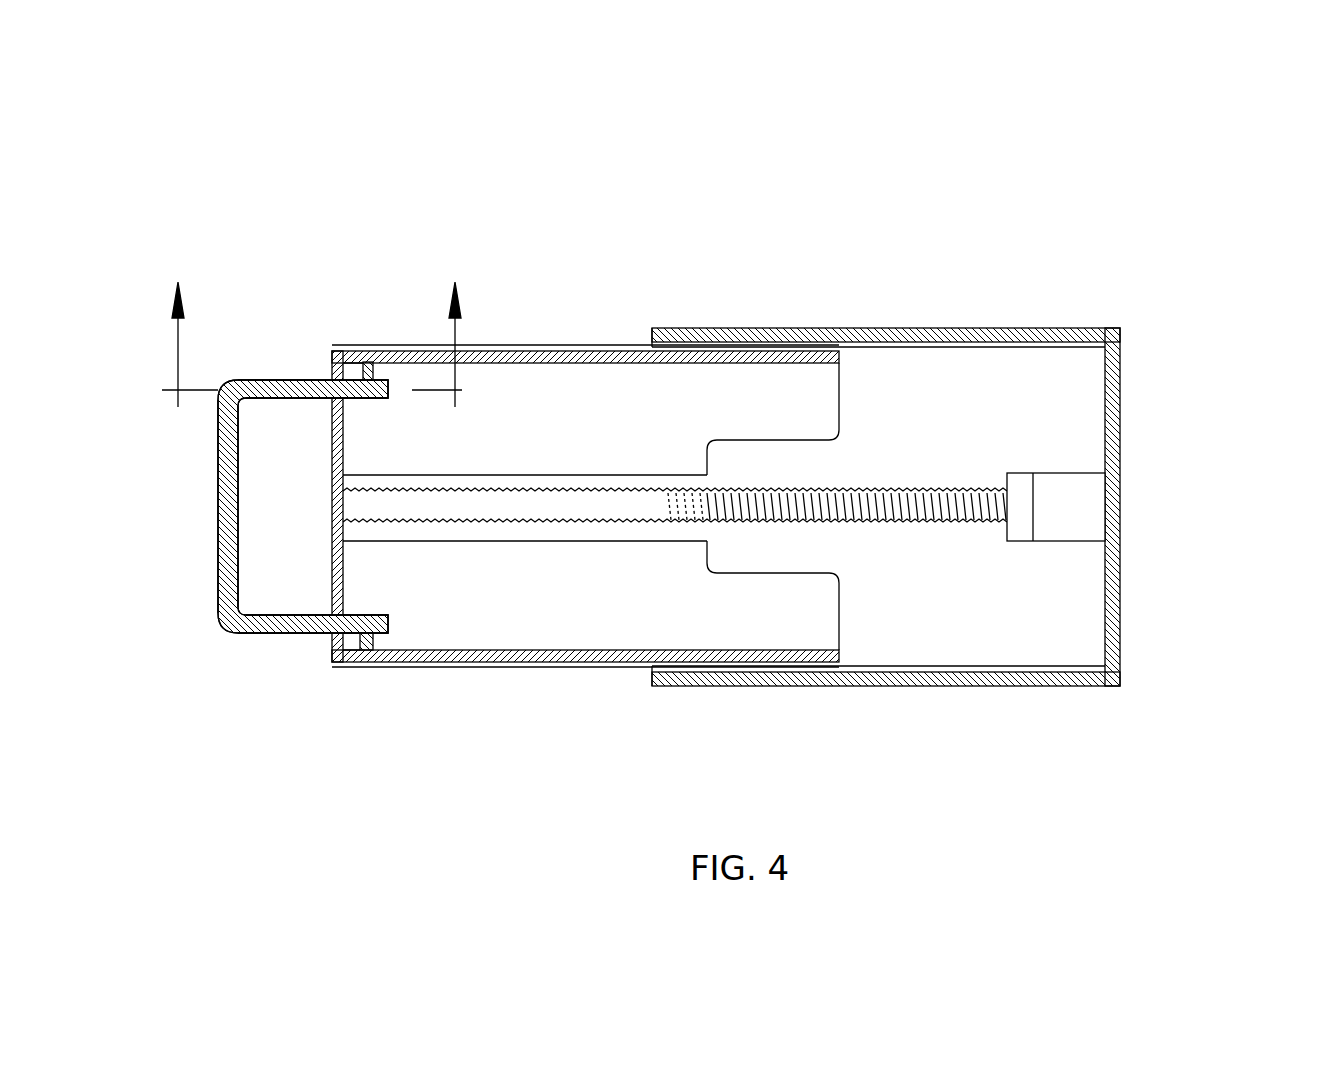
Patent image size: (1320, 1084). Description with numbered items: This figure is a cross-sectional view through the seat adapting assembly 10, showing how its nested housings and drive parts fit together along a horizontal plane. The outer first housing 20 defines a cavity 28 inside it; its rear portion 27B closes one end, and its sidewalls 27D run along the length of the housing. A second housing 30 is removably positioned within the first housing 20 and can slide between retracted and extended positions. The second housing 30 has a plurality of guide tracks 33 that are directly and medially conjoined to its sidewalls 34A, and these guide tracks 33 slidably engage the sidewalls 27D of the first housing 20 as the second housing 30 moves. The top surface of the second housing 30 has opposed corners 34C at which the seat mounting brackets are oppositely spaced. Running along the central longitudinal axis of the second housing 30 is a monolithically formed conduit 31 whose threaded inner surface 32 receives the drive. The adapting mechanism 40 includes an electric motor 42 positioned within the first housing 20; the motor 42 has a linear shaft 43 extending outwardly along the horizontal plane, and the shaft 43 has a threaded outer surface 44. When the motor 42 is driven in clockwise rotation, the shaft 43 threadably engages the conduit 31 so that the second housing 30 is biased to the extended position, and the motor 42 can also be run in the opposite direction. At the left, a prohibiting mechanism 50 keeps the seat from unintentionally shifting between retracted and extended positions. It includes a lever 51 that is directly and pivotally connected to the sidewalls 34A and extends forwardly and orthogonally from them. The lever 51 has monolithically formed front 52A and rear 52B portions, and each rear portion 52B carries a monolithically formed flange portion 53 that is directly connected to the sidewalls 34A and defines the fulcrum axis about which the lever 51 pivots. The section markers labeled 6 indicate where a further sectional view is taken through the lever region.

The assembly 10 is at (1206, 240).
The section line 6- 6 is at (316, 344).
The first housing 20 is at (1122, 328).
The rear portion 27B is at (1122, 372).
The sidewalls 27D is at (950, 328).
The cavity 28 is at (1073, 643).
The second housing 30 is at (330, 363).
The conduit 31 is at (587, 482).
The threaded inner surface 32 is at (520, 491).
The guide tracks 33 is at (548, 345).
The sidewalls 34A is at (615, 350).
The opposed corners 34C is at (350, 372).
The adapting mechanism 40 is at (1050, 543).
The electric motor 42 is at (1092, 512).
The linear shaft 43 is at (977, 490).
The threaded outer surface 44 is at (910, 493).
The prohibiting mechanism 50 is at (210, 620).
The lever 51 is at (273, 627).
The front portion 52A is at (218, 505).
The rear portion 52B is at (392, 385).
The flange portion 53 is at (366, 363).